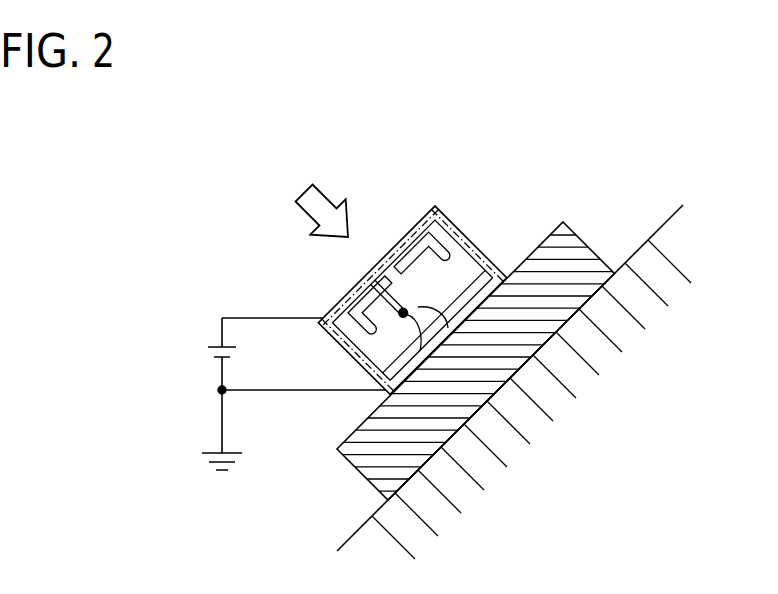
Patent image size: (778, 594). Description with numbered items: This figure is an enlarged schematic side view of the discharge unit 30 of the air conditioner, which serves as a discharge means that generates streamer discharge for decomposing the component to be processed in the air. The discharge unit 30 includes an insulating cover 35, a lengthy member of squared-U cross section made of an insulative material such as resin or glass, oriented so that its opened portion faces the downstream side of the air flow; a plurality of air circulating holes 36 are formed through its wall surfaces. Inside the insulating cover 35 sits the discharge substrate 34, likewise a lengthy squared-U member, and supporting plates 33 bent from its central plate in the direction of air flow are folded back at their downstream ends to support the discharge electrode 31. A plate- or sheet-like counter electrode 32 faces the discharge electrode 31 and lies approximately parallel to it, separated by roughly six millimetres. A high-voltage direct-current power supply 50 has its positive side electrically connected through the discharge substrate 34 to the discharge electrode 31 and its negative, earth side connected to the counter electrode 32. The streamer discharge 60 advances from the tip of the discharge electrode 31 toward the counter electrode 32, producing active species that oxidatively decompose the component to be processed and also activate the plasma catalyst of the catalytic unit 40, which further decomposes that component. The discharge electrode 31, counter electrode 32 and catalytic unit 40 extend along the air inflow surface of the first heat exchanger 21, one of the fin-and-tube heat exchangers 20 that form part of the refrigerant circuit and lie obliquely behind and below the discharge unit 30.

The heat exchanger 20 is at (641, 247).
The first heat exchanger 21 is at (529, 351).
The discharge unit 30 is at (531, 147).
The discharge electrode 31 is at (390, 299).
The counter electrode 32 is at (441, 328).
The supporting plate 33 is at (400, 284).
The discharge substrate 34 is at (412, 300).
The insulating cover 35 is at (412, 300).
The air circulating holes 36 is at (412, 300).
The catalytic unit 40 is at (585, 242).
The high-voltage direct-current power supply 50 is at (206, 336).
The streamer discharge 60 is at (448, 328).